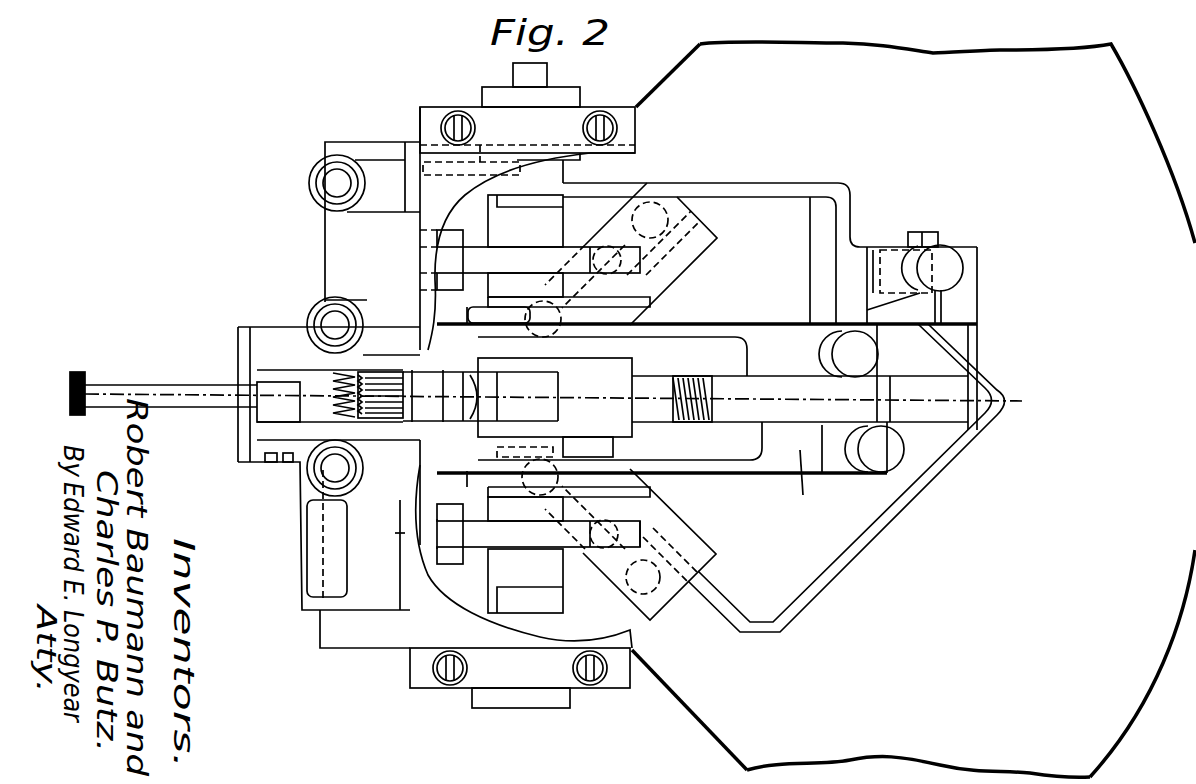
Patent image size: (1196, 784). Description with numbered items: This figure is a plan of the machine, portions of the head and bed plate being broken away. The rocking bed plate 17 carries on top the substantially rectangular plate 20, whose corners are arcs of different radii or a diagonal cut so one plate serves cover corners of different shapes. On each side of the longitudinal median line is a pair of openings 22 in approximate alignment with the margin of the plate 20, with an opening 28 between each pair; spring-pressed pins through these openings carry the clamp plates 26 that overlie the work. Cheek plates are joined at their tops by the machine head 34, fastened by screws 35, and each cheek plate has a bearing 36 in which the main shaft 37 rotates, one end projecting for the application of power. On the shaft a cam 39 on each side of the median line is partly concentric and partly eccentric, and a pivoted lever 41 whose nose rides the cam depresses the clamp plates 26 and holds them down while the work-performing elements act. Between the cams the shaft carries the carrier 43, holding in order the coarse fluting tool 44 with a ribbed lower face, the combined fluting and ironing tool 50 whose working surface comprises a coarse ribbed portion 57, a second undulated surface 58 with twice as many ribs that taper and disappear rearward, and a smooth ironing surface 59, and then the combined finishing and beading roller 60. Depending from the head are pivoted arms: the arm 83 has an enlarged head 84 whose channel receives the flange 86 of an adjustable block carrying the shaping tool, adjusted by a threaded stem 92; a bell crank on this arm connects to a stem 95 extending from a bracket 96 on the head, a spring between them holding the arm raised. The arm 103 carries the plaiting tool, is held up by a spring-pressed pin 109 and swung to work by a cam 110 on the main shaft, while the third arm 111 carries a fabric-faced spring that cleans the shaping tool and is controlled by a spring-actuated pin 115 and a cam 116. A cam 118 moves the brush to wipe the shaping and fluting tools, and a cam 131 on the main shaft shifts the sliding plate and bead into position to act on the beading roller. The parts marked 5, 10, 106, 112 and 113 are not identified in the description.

The control rod / section line 5 is at (542, 393).
The slide bar 10 is at (712, 535).
The bed plate 17 is at (805, 409).
The plate 20 is at (846, 478).
The openings 22 is at (652, 220).
The clamp plates 26 is at (690, 282).
The opening 28 is at (640, 520).
The machine head 34 is at (522, 397).
The screws 35 is at (455, 112).
The bearing 36 is at (497, 88).
The main shaft 37 is at (536, 66).
The cam 39 is at (512, 250).
The lever 41 is at (700, 264).
The carrier 43 is at (620, 368).
The coarse fluting tool 44 is at (335, 380).
The combined fluting and ironing tool 50 is at (437, 374).
The undulated or ribbed portion 57 is at (380, 370).
The second undulated surface 58 is at (378, 420).
The smooth surface 59 is at (477, 396).
The combined finishing and beading roller 60 is at (555, 403).
The arm 83 is at (697, 448).
The enlarged head 84 is at (803, 486).
The flange 86 is at (976, 322).
The threaded stem 92 is at (890, 452).
The stem 95 is at (322, 474).
The bracket 96 is at (380, 210).
The arm 103 is at (712, 327).
The ball bearing 106 is at (848, 350).
The spring pressed pin 109 is at (322, 312).
The cam 110 is at (648, 306).
The third arm 111 is at (815, 185).
The vertical plate 112 is at (812, 290).
The bolt 113 is at (905, 324).
The spring-actuated pin 115 is at (335, 183).
The cam 116 is at (443, 167).
The cam 118 is at (615, 450).
The cam 131 is at (400, 648).